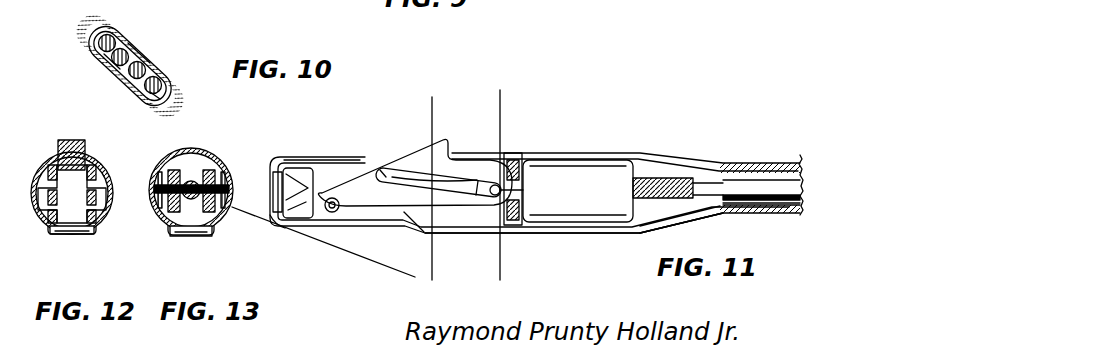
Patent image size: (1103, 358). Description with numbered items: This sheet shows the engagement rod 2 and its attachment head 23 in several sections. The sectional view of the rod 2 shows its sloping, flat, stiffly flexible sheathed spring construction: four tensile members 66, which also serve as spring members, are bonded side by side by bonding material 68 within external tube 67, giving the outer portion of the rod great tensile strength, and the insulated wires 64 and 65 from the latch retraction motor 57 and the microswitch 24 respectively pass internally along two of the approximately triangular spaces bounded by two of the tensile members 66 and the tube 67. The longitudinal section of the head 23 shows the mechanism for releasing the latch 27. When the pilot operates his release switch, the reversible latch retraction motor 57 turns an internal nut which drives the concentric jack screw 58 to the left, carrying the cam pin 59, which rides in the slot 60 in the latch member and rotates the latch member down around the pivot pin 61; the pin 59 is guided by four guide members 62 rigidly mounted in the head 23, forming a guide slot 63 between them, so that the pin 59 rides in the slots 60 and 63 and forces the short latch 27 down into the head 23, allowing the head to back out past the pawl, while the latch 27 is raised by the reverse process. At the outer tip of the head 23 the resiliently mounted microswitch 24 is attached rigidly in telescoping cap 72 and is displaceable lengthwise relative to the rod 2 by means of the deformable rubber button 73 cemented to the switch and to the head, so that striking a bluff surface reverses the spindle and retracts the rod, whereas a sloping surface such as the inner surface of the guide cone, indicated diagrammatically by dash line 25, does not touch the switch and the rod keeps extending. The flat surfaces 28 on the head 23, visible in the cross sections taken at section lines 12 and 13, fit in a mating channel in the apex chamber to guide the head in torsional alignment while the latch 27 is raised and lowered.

In FIG. 10, the rod 2 is at (92, 48).
In FIG. 11, the rod 2 is at (778, 160).
In FIG. 11, the section 12— 12 is at (432, 108).
In FIG. 11, the section 13— 13 is at (500, 107).
In FIG. 11, the head 23 is at (587, 238).
In FIG. 11, the microswitch 24 is at (276, 172).
In FIG. 11, the dash line 25 is at (366, 258).
In FIG. 12, the latch 27 is at (60, 142).
In FIG. 11, the latch 27 is at (445, 146).
In FIG. 12, the flat surfaces 28 is at (50, 234).
In FIG. 13, the flat surfaces 28 is at (172, 234).
In FIG. 11, the latch retraction motor 57 is at (584, 190).
In FIG. 11, the jack screw 58 is at (667, 180).
In FIG. 13, the cam pin 59 is at (225, 187).
In FIG. 11, the cam pin 59 is at (524, 190).
In FIG. 11, the slot 60 is at (428, 174).
In FIG. 11, the pivot pin 61 is at (339, 203).
In FIG. 12, the guide members 62 is at (100, 172).
In FIG. 11, the guide members 62 is at (385, 175).
In FIG. 12, the guide slot 63 is at (104, 190).
In FIG. 11, the guide slot 63 is at (439, 184).
In FIG. 10, the insulated wire 64 is at (104, 62).
In FIG. 11, the insulated wire 64 is at (705, 215).
In FIG. 10, the insulated wire 65 is at (137, 95).
In FIG. 11, the insulated wire 65 is at (281, 228).
In FIG. 10, the tensile members 66 is at (101, 34).
In FIG. 10, the external tube 67 is at (143, 47).
In FIG. 10, the bonding material 68 is at (120, 36).
In FIG. 11, the telescoping cap 72 is at (338, 157).
In FIG. 11, the rubber button 73 is at (299, 170).